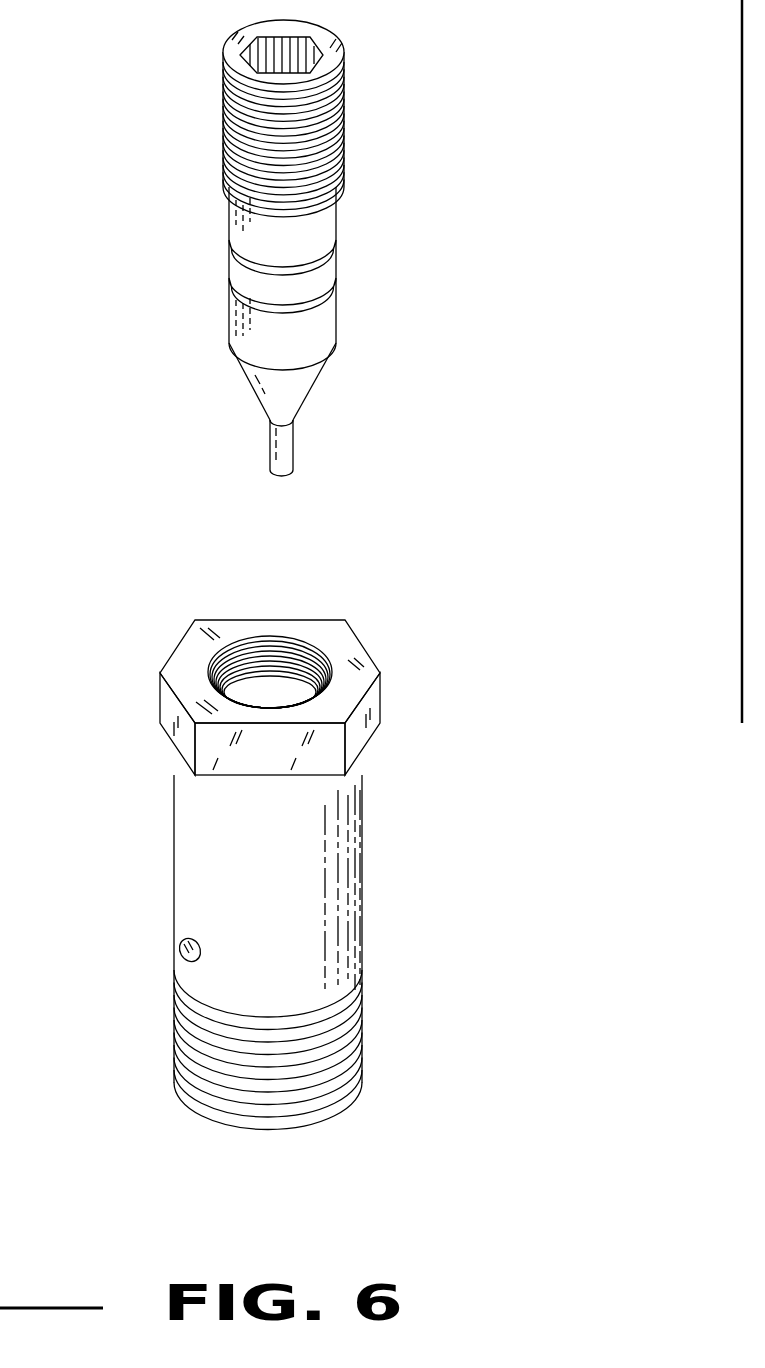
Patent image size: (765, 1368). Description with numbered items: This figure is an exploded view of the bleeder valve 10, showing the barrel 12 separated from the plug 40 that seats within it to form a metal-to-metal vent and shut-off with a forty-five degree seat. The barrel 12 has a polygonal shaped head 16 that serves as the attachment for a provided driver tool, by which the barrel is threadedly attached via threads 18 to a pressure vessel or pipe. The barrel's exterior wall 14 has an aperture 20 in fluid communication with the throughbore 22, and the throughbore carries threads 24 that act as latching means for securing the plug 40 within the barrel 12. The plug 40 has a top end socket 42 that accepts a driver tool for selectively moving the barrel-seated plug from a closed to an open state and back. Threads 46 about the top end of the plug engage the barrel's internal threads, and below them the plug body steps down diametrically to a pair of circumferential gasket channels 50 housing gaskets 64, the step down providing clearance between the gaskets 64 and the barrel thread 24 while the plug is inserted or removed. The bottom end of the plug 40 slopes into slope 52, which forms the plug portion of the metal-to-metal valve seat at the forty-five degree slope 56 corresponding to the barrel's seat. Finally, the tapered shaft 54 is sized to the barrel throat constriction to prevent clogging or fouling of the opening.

The bleeder valve 10 is at (600, 182).
The barrel 12 is at (211, 836).
The exterior wall 14 is at (174, 795).
The polygonal shaped head 16 is at (211, 659).
The threads 18 is at (174, 1053).
The aperture 20 is at (183, 952).
The throughbore 22 is at (260, 625).
The threads 24 is at (304, 650).
The plug 40 is at (279, 241).
The top end socket 42 is at (263, 55).
The threads 46 is at (223, 113).
The circumferential gasket channels 50 is at (231, 242).
The slope 52 is at (247, 372).
The tapered shaft 54 is at (271, 447).
The 45° slope 56 is at (320, 395).
The gaskets 64 is at (336, 252).